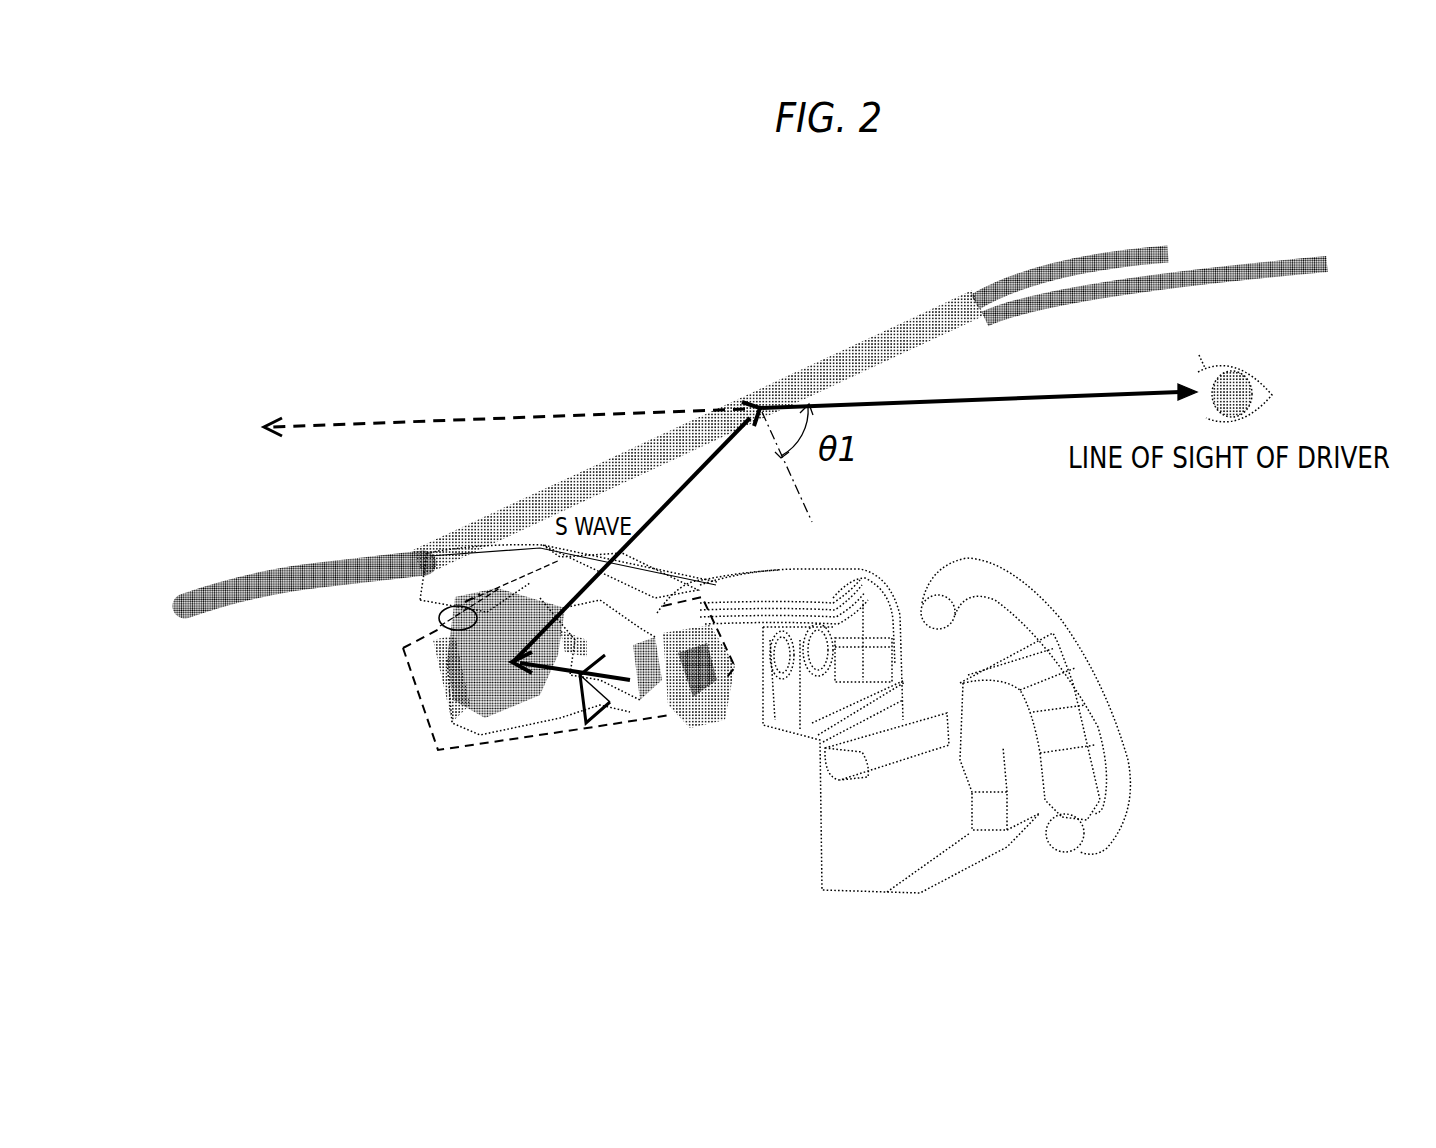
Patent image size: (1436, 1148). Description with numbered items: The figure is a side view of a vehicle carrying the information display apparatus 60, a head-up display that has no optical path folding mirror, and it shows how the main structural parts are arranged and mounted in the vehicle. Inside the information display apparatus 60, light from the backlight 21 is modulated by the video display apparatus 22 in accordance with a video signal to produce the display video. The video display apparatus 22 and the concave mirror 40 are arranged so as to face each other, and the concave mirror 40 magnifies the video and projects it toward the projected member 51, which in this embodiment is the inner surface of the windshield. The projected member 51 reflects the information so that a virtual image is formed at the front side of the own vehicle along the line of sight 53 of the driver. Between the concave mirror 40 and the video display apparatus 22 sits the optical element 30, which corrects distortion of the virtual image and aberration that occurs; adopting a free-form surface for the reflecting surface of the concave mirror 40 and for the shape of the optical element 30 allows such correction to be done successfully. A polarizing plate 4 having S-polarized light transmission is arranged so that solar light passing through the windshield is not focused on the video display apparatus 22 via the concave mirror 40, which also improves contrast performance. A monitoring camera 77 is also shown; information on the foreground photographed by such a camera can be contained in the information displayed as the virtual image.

The polarizing plate 4 is at (640, 707).
The backlight 21 is at (725, 703).
The video display apparatus 22 is at (682, 713).
The optical element 30 is at (583, 727).
The concave mirror 40 is at (470, 752).
The projected member 51 is at (930, 327).
The line of sight of driver 53 is at (1255, 375).
The information display apparatus 60 is at (652, 717).
The monitoring camera 77 is at (440, 626).